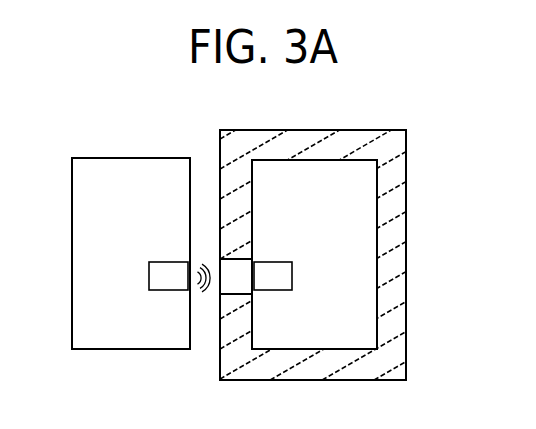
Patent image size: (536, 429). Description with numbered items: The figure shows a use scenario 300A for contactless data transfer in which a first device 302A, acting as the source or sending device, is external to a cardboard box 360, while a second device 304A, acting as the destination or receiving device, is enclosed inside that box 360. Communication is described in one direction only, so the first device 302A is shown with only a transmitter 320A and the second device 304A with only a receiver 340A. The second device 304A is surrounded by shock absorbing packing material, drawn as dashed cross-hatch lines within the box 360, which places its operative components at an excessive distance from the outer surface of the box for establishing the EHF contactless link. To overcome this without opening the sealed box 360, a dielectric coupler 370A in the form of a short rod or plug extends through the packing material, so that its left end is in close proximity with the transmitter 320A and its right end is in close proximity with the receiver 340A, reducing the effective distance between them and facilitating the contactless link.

The scenario 300A is at (172, 103).
The first device 302A is at (166, 341).
The second device 304A is at (345, 341).
The transmitter 320A is at (168, 262).
The receiver 340A is at (275, 262).
The cardboard box 360 is at (383, 130).
The dielectric coupler 370A is at (231, 258).